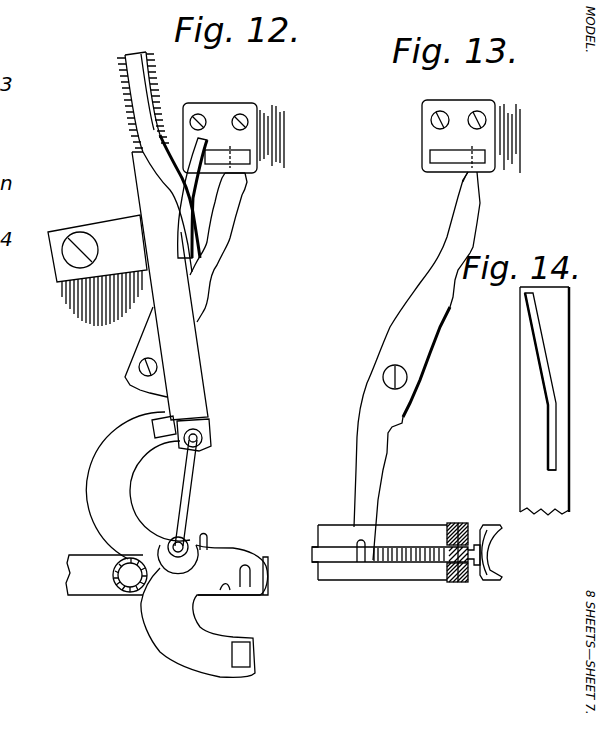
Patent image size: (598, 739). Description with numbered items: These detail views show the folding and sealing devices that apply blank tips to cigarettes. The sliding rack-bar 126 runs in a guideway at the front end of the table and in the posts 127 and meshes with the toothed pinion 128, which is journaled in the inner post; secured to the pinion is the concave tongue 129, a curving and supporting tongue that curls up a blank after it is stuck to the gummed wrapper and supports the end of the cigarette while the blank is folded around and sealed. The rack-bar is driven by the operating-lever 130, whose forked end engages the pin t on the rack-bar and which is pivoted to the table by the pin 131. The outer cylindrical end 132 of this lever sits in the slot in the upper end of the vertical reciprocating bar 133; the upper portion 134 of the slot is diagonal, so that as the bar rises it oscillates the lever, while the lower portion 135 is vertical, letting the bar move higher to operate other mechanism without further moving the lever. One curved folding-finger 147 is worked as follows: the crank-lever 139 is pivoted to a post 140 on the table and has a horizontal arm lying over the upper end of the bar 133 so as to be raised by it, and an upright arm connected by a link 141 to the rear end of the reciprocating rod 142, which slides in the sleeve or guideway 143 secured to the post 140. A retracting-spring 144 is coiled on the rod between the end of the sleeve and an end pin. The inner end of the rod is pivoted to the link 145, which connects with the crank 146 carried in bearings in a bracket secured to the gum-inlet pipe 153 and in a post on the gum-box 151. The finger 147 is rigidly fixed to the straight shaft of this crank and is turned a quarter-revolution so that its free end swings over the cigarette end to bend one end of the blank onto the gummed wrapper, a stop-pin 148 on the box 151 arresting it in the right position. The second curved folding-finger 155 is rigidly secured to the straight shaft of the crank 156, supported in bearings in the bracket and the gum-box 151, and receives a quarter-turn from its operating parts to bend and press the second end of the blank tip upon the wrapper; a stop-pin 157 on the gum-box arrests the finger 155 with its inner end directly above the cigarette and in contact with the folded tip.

In FIG. 13, the sliding rack-bar 126 is at (405, 562).
In FIG. 13, the posts 127 is at (463, 517).
In FIG. 13, the toothed pinion 128 is at (443, 565).
In FIG. 13, the concave tongue 129 is at (496, 553).
In FIG. 12, the operating-lever 130 is at (229, 248).
In FIG. 13, the operating-lever 130 is at (342, 471).
In FIG. 12, the pin 131 is at (138, 367).
In FIG. 13, the pin 131 is at (384, 374).
In FIG. 13, the cylindrical end 132 is at (469, 175).
In FIG. 12, the vertical reciprocating bar 133 is at (248, 156).
In FIG. 13, the vertical reciprocating bar 133 is at (430, 155).
In FIG. 14, the vertical reciprocating bar 133 is at (522, 417).
In FIG. 14, the upper slot portion 134 is at (536, 342).
In FIG. 14, the lower slot portion 135 is at (548, 452).
In FIG. 12, the crank-lever 139 is at (200, 197).
In FIG. 12, the post 140 is at (114, 228).
In FIG. 12, the link 141 is at (130, 139).
In FIG. 12, the reciprocating rod 142 is at (126, 112).
In FIG. 12, the sleeve or guideway 143 is at (137, 161).
In FIG. 12, the retracting-spring 144 is at (160, 107).
In FIG. 13, the retracting-spring 144 is at (471, 136).
In FIG. 12, the link 145 is at (195, 472).
In FIG. 12, the crank 146 is at (187, 535).
In FIG. 12, the curved folding-finger 147 is at (88, 490).
In FIG. 12, the stop-pin 148 is at (208, 537).
In FIG. 12, the gum-box 151 is at (67, 576).
In FIG. 12, the gum-inlet pipe 153 is at (113, 597).
In FIG. 12, the second curved folding-finger 155 is at (160, 640).
In FIG. 12, the crank 156 is at (247, 594).
In FIG. 12, the stop-pin 157 is at (266, 582).
In FIG. 13, the pin t is at (362, 562).